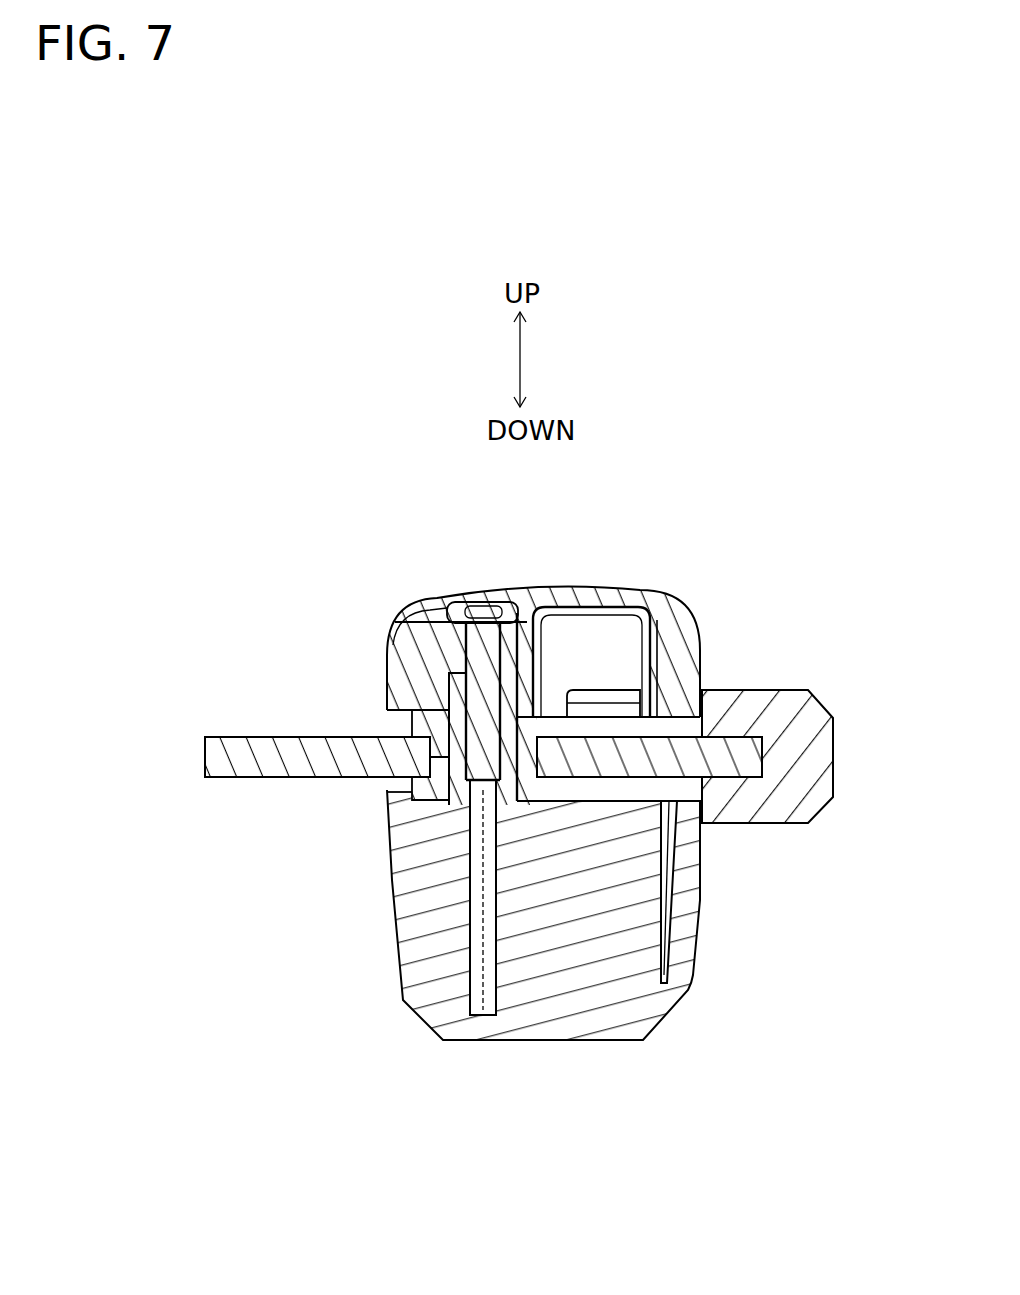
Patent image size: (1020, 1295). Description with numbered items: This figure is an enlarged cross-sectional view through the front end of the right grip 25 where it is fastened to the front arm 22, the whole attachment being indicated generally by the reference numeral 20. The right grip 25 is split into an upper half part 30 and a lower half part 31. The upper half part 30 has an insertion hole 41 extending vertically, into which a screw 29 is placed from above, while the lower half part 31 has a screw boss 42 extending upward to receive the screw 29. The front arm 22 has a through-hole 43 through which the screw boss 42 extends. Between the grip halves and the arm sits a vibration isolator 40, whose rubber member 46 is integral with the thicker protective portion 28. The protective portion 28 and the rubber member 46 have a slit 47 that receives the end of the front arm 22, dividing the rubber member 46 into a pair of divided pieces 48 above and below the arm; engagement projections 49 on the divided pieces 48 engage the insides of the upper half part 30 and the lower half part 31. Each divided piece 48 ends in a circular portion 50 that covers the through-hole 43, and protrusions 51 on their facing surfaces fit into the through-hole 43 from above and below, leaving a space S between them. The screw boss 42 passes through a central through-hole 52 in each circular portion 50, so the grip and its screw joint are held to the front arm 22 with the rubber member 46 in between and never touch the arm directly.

The attachment structure 20 is at (292, 697).
The panel 22 is at (232, 735).
The cap 25 is at (656, 592).
The fixing block 28 is at (791, 703).
The screw head 29 is at (489, 601).
The cover 30 is at (604, 700).
The body 31 is at (583, 1020).
The space 40 is at (550, 690).
The upper housing 41 is at (428, 604).
The side wall 42 is at (447, 690).
The panel end 43 is at (397, 746).
The inner wall 46 is at (583, 680).
The plate 47 is at (723, 737).
The rib 48 is at (637, 690).
The outer wall 49 is at (681, 672).
The clip 50 is at (425, 710).
The claw 51 is at (420, 722).
The screw 52 is at (516, 612).
The gap S is at (437, 790).